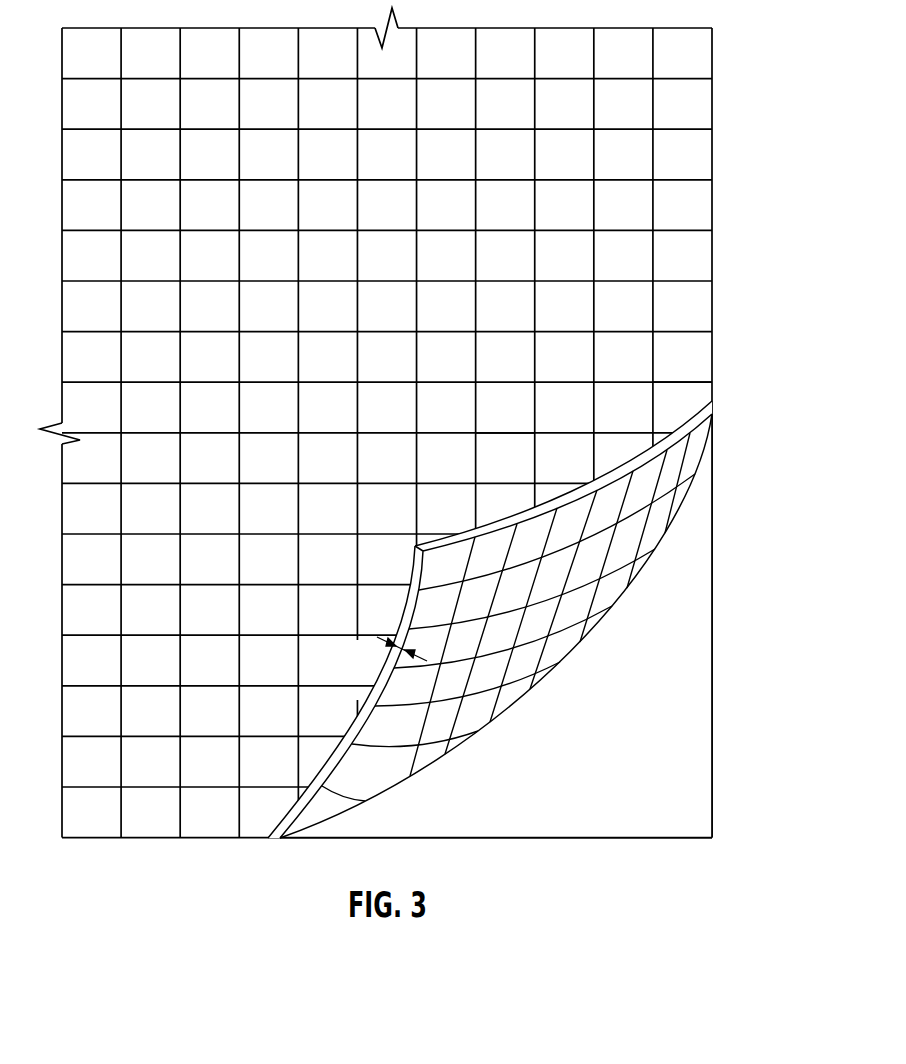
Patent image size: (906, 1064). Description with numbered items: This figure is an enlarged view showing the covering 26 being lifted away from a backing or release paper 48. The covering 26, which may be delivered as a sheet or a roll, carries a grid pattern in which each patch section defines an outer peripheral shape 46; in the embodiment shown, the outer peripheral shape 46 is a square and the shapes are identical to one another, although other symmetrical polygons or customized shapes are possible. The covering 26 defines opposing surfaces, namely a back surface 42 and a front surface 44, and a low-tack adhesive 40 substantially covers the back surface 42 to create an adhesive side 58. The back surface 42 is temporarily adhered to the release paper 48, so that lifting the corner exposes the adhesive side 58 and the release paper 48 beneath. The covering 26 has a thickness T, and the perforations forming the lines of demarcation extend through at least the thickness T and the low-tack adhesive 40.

The covering 26 is at (688, 263).
The outer peripheral shape 46 is at (689, 381).
The front surface 44 is at (521, 475).
The low-tack adhesive 40 is at (457, 673).
The back surface 42 is at (522, 640).
The adhesive side 58 is at (583, 592).
The release paper 48 is at (649, 707).
The thickness T is at (381, 645).